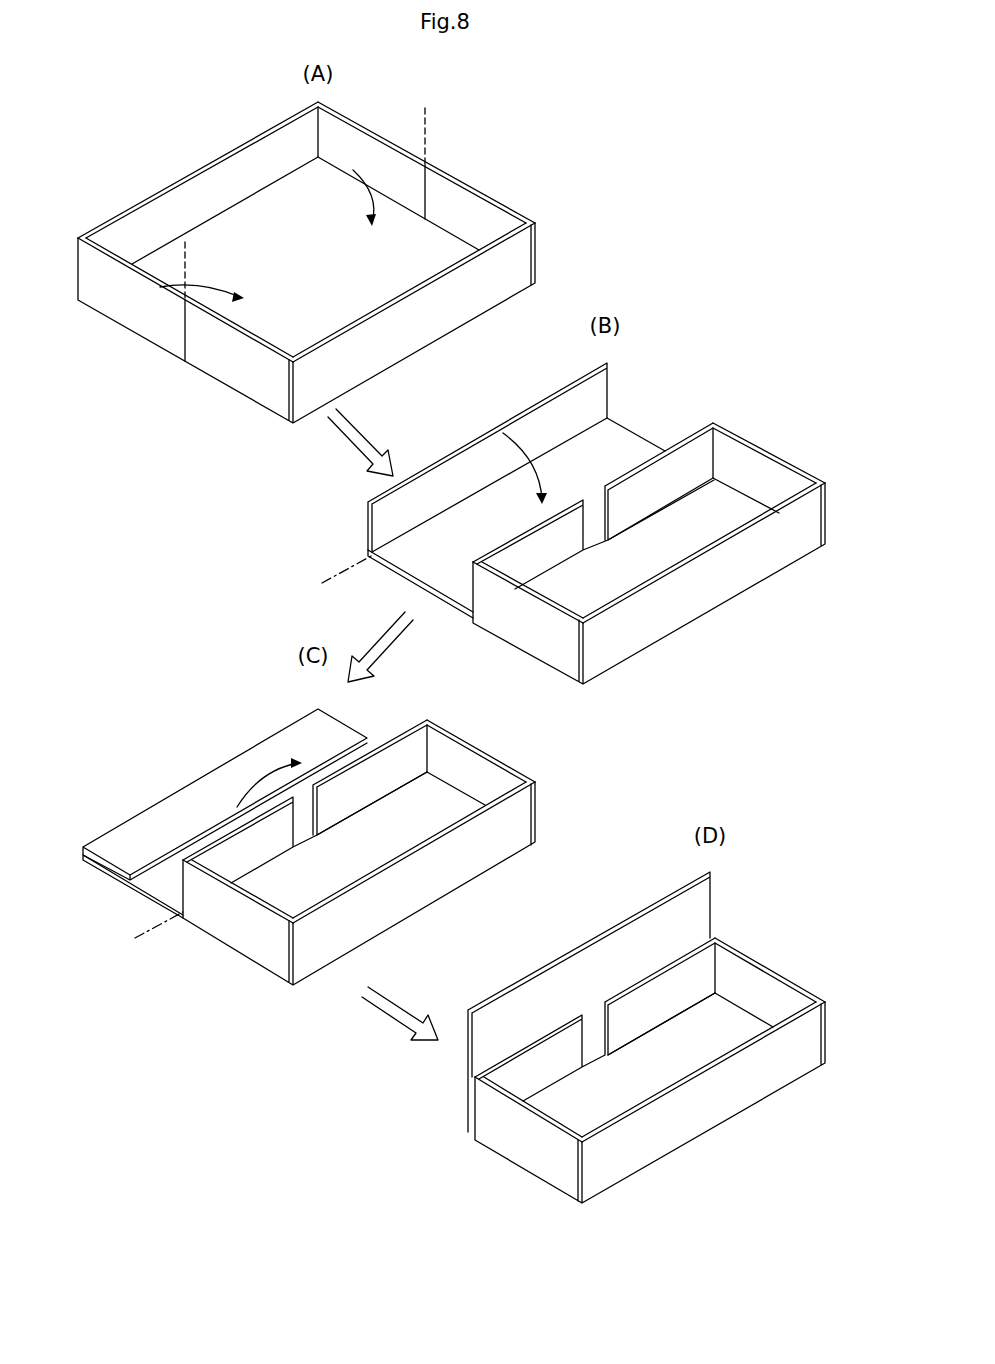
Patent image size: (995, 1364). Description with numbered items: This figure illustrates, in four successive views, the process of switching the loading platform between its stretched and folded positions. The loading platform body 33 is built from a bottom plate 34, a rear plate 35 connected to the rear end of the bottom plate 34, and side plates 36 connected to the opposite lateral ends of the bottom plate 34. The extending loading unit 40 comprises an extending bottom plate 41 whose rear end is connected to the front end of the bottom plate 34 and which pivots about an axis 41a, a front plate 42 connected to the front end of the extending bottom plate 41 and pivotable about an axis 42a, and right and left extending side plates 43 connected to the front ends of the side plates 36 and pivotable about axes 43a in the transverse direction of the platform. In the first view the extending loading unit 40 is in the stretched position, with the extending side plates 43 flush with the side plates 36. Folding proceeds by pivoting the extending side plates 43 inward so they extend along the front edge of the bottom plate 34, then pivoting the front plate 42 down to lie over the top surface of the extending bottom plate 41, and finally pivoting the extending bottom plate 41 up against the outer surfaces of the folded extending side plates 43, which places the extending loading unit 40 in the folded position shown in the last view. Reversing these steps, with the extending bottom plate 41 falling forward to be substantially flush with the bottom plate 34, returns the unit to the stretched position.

The loading platform body 33 is at (473, 188).
The bottom plate 34 is at (317, 313).
The rear plate 35 is at (427, 320).
The side plates 36 is at (443, 213).
The extending loading unit 40 is at (368, 128).
The extending bottom plate 41 is at (250, 267).
The axis 41a is at (142, 937).
The front plate 42 is at (138, 223).
The axis 42a is at (332, 577).
The extending side plates 43 is at (342, 147).
The axes 43a is at (427, 120).